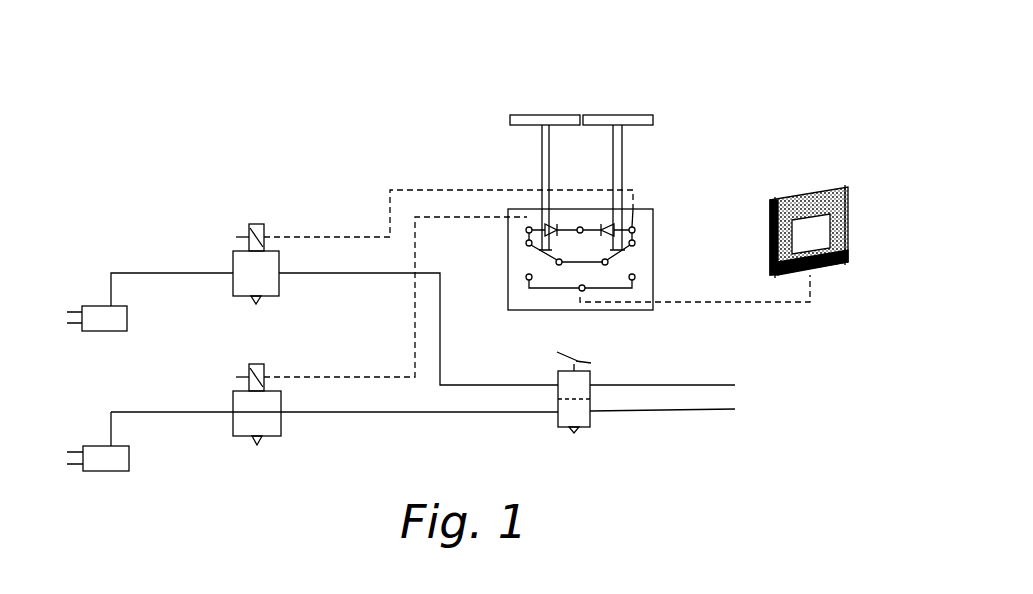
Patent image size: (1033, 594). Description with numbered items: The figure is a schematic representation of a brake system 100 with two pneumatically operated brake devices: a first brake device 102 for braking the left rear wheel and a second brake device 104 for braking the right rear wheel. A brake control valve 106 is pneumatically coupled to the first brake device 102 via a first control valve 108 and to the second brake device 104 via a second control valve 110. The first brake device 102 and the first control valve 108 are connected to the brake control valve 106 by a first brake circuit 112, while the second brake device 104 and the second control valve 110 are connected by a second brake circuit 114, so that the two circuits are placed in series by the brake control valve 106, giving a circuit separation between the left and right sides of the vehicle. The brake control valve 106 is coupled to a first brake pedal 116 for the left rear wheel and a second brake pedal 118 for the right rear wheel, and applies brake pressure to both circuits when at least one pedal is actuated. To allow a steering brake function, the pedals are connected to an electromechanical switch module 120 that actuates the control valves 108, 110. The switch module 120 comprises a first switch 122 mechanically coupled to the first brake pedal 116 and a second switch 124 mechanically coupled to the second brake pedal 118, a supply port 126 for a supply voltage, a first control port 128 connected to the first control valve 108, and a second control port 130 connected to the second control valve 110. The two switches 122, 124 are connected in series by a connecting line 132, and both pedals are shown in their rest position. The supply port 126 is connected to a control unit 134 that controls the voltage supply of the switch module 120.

The brake system 100 is at (152, 176).
The first brake device 102 is at (93, 446).
The second brake device 104 is at (93, 302).
The brake control valve 106 is at (592, 417).
The first control valve 108 is at (281, 430).
The second control valve 110 is at (240, 250).
The first brake circuit 112 is at (420, 414).
The second brake circuit 114 is at (440, 322).
The first brake pedal 116 is at (540, 115).
The second brake pedal 118 is at (628, 115).
The electromechanical switch module 120 is at (654, 224).
The first switch 122 is at (556, 261).
The second switch 124 is at (634, 245).
The supply port 126 is at (579, 288).
The first control port 128 is at (526, 229).
The second control port 130 is at (635, 231).
The connecting line 132 is at (590, 266).
The control unit 134 is at (850, 208).